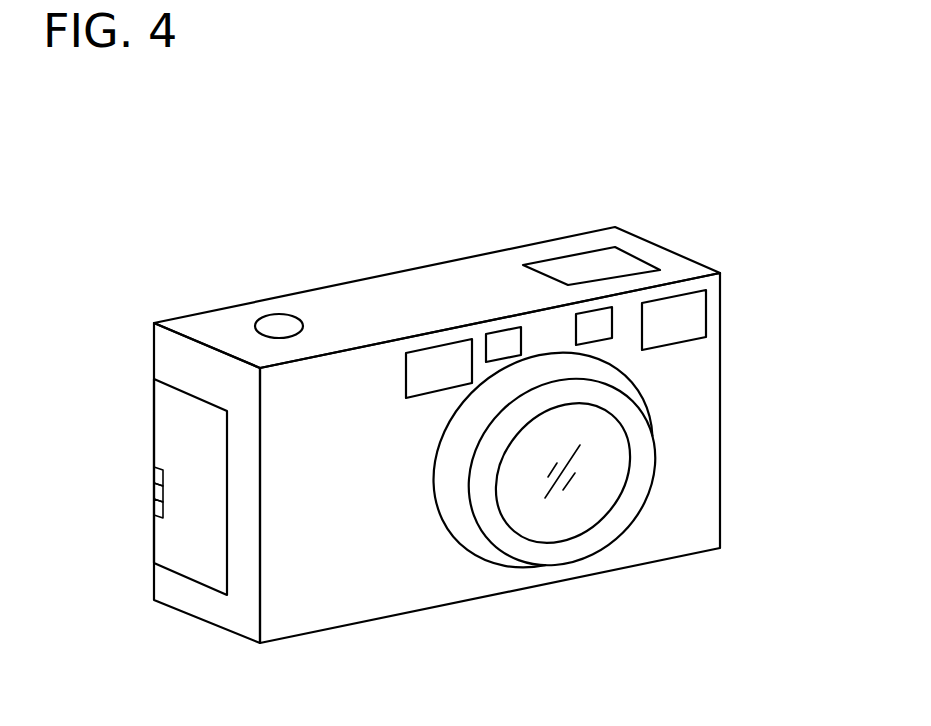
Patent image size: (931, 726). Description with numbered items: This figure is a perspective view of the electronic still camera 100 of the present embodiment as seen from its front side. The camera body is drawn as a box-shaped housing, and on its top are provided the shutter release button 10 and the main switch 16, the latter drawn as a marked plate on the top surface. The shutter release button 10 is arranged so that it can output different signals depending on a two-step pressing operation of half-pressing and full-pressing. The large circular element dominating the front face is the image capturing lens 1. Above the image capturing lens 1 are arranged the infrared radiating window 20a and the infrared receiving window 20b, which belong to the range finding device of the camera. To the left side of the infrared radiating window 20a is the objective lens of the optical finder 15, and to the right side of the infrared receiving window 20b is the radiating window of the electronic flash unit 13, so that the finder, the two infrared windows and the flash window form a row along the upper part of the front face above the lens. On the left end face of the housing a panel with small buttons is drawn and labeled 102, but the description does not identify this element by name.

The image capturing lens 1 is at (612, 457).
The shutter release button 10 is at (279, 327).
The electronic flash unit 13 is at (688, 318).
The optical finder 15 is at (432, 358).
The main switch 16 is at (583, 253).
The infrared radiating window 20a is at (507, 342).
The infrared receiving window 20b is at (603, 323).
The electronic still camera 100 is at (202, 312).
The side cover 102 is at (163, 542).